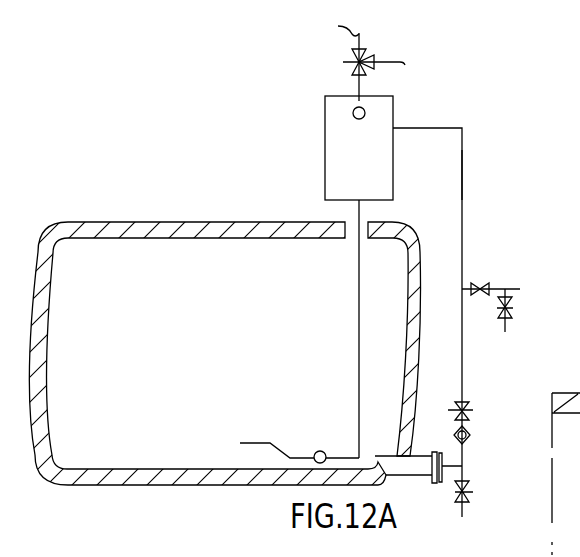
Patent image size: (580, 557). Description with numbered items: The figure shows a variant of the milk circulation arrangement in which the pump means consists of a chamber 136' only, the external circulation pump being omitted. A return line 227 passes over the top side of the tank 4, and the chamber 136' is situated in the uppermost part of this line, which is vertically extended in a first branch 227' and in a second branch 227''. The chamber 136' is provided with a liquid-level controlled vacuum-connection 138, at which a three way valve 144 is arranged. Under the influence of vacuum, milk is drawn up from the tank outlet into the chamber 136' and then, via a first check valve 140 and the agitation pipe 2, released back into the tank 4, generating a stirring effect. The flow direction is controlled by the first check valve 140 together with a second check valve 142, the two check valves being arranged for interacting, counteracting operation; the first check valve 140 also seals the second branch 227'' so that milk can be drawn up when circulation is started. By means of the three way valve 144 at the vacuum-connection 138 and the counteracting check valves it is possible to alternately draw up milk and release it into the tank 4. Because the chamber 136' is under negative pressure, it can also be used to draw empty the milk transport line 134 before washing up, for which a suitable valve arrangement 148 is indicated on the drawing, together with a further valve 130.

The tank 4 is at (184, 232).
The agitation pipe 2 is at (259, 438).
The first check valve 140 is at (347, 428).
The chamber 136' is at (359, 148).
The vacuum-connection 138 is at (331, 27).
The three way valve 144 is at (368, 58).
The return line 227 is at (427, 308).
The first branch 227' is at (484, 174).
The second branch 227'' is at (336, 329).
The valve 130 is at (483, 290).
The milk transport line 134 is at (520, 290).
The valve arrangement 148 is at (466, 406).
The second check valve 142 is at (467, 437).